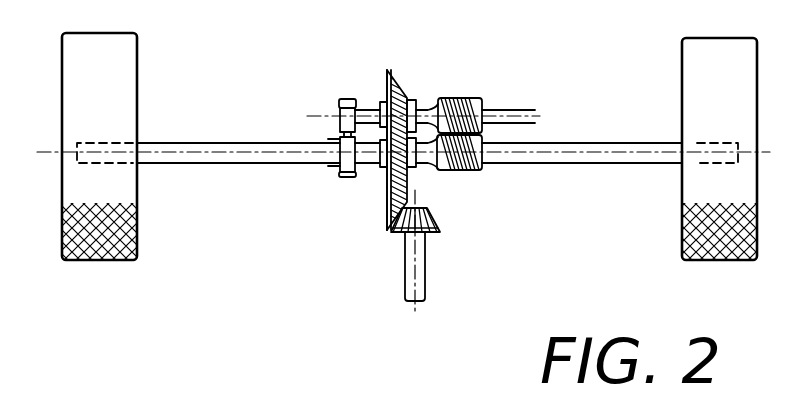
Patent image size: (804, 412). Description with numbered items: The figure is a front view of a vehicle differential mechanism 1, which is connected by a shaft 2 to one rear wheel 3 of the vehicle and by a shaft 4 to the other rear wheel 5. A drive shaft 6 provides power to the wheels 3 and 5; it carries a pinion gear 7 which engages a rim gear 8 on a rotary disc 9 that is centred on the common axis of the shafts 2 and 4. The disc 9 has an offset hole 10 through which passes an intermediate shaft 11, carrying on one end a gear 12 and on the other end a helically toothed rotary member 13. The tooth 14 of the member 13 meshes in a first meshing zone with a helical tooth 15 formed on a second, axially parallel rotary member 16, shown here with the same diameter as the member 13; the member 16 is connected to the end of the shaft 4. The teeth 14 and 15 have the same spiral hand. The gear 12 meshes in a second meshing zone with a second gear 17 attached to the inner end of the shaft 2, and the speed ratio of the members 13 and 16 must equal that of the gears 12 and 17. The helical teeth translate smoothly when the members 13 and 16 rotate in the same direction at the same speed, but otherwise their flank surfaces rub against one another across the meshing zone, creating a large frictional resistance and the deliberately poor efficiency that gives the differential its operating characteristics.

The vehicle differential mechanism 1 is at (495, 60).
The shaft 2 is at (267, 161).
The rear wheel 3 is at (130, 72).
The shaft 4 is at (597, 149).
The rear wheel 5 is at (695, 183).
The drive shaft 6 is at (422, 285).
The pinion gear 7 is at (436, 213).
The rim gear 8 is at (399, 82).
The rotary disc 9 is at (390, 205).
The offset hole 10 is at (417, 93).
The intermediate shaft 11 is at (362, 103).
The gear 12 is at (338, 97).
The helically toothed rotary member 13 is at (500, 105).
The tooth 14 is at (460, 94).
The helical tooth 15 is at (463, 173).
The second rotary member 16 is at (503, 178).
The second gear 17 is at (346, 178).